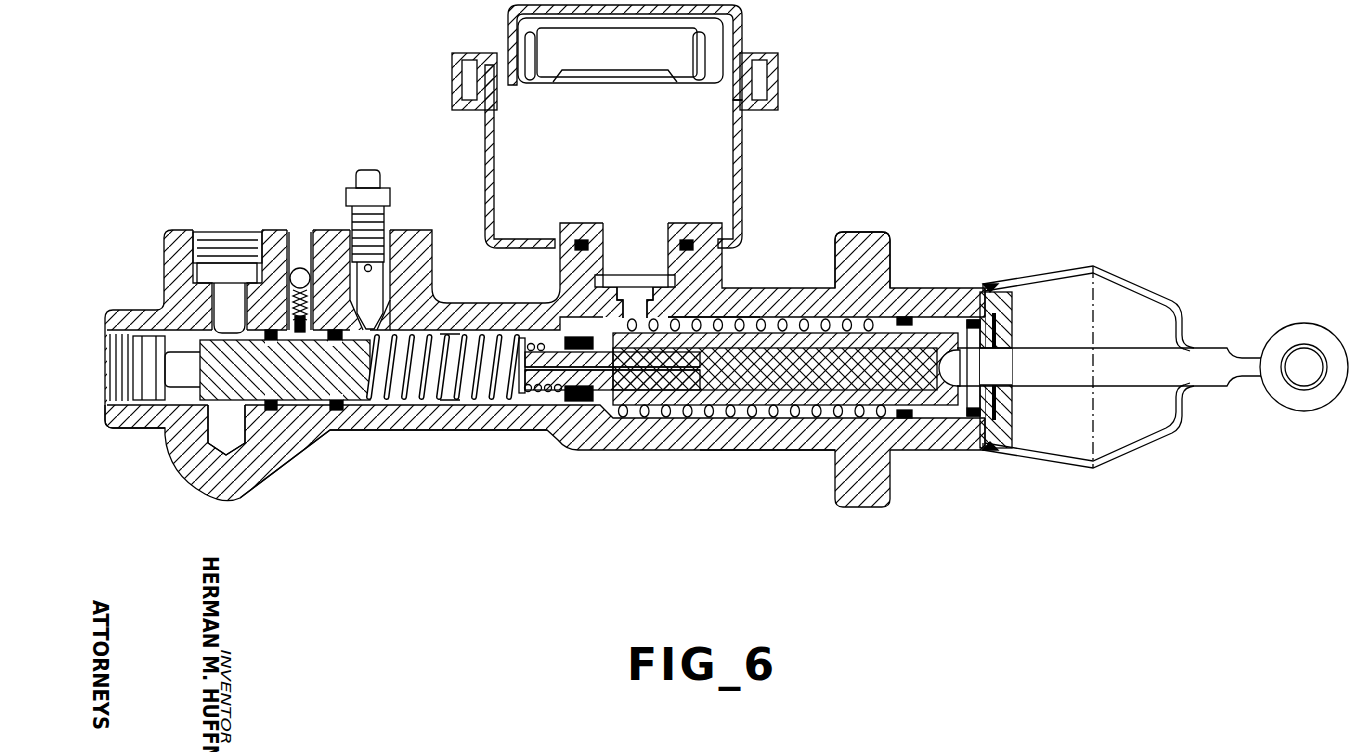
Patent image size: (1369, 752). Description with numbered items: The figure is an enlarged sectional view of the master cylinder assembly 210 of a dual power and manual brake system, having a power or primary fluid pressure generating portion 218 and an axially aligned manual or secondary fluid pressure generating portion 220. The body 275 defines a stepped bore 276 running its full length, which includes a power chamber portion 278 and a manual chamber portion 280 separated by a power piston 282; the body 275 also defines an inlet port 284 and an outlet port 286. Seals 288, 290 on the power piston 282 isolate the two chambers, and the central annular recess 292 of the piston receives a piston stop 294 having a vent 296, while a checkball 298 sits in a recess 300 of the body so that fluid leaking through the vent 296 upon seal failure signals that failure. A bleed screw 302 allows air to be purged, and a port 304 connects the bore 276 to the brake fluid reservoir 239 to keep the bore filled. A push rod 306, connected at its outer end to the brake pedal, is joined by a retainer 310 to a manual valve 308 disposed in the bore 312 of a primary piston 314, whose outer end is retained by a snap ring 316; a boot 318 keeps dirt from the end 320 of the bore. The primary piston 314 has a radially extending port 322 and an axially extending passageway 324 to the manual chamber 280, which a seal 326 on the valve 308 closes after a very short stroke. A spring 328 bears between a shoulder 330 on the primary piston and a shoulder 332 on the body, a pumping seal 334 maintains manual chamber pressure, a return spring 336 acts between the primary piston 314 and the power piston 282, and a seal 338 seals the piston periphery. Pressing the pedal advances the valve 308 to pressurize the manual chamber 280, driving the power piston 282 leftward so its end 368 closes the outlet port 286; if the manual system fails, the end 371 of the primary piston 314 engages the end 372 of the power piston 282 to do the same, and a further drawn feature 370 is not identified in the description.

The master cylinder assembly 210 is at (686, 451).
The power fluid pressure generating portion 218 is at (300, 255).
The manual fluid pressure generating portion 220 is at (762, 282).
The brake fluid reservoir 239 is at (744, 152).
The body 275 is at (500, 432).
The stepped bore 276 is at (762, 420).
The power chamber portion 278 is at (197, 390).
The manual chamber portion 280 is at (466, 403).
The power piston 282 is at (281, 392).
The inlet port 284 is at (213, 228).
The outlet port 286 is at (105, 332).
The seal 288 is at (284, 395).
The seal 290 is at (356, 412).
The annular recess 292 is at (332, 441).
The piston stop 294 is at (309, 306).
The vent 296 is at (292, 309).
The checkball 298 is at (289, 262).
The recess 300 is at (311, 277).
The bleed screw 302 is at (390, 215).
The port 304 is at (636, 292).
The push rod 306 is at (1222, 348).
The manual valve 308 is at (786, 369).
The retainer 310 is at (974, 366).
The bore 312 is at (872, 393).
The primary piston 314 is at (955, 422).
The snap ring 316 is at (1012, 404).
The boot 318 is at (1035, 272).
The end of the bore 320 is at (1012, 333).
The radially extending port 322 is at (661, 329).
The axially extending passageway 324 is at (655, 375).
The seal 326 is at (678, 362).
The spring 328 is at (762, 324).
The shoulder 330 is at (894, 318).
The shoulder 332 is at (614, 319).
The pumping seal 334 is at (569, 401).
The return spring 336 is at (453, 346).
The seal 338 is at (893, 421).
The end of the power piston 368 is at (152, 415).
The passage 370 is at (246, 412).
The end of the primary piston 371 is at (513, 348).
The end of the power piston 372 is at (378, 343).